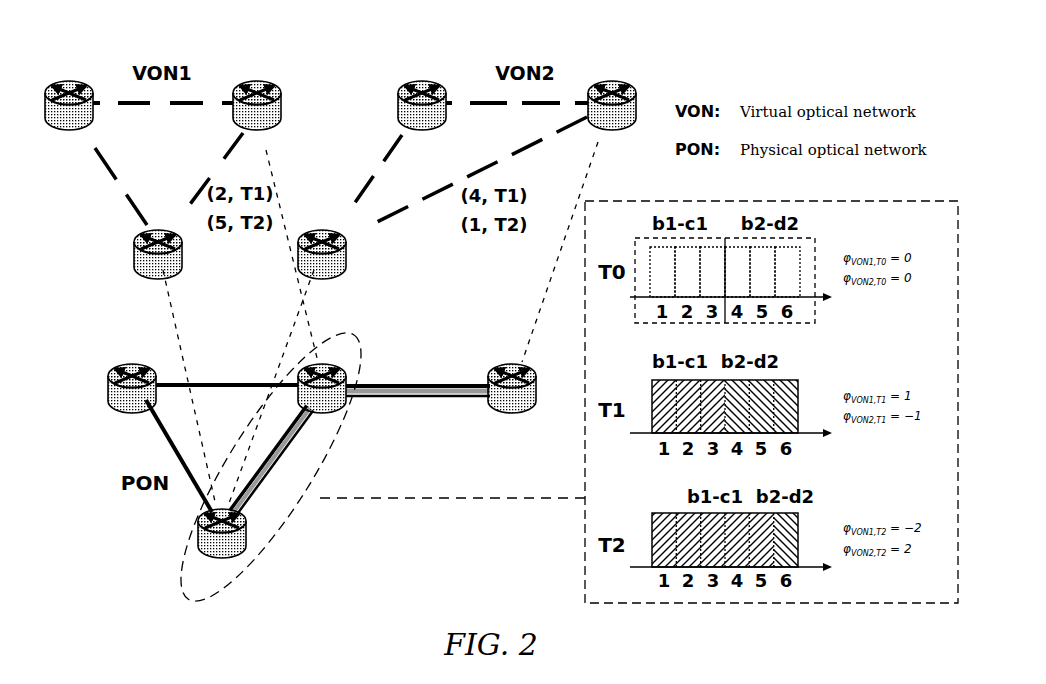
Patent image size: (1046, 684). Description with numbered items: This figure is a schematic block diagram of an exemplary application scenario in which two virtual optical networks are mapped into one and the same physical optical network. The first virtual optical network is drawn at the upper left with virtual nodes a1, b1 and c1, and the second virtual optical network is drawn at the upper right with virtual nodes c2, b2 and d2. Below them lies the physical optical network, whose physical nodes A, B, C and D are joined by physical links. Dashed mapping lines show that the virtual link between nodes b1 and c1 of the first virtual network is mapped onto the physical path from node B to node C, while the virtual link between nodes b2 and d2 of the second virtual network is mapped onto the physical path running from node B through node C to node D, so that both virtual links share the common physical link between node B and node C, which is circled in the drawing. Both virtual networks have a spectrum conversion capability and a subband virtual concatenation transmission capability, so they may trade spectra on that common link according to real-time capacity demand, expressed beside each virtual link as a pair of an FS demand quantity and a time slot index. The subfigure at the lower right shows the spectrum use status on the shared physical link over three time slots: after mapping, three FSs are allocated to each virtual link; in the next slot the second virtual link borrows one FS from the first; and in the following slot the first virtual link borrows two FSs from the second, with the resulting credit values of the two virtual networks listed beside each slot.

The virtual node a1 of VON1 a1 is at (69, 119).
The virtual node b1 of VON1 b1 is at (158, 267).
The virtual node c1 of VON1 c1 is at (257, 119).
The virtual node b2 of VON2 b2 is at (322, 267).
The virtual node c2 of VON2 c2 is at (422, 119).
The virtual node d2 of VON2 d2 is at (612, 119).
The physical node A is at (132, 404).
The physical node B is at (222, 549).
The physical node C is at (322, 404).
The physical node D is at (512, 404).